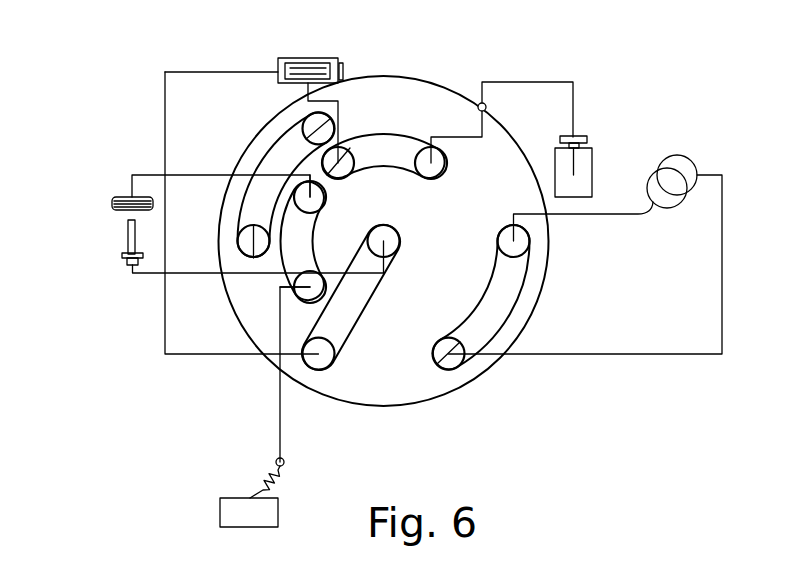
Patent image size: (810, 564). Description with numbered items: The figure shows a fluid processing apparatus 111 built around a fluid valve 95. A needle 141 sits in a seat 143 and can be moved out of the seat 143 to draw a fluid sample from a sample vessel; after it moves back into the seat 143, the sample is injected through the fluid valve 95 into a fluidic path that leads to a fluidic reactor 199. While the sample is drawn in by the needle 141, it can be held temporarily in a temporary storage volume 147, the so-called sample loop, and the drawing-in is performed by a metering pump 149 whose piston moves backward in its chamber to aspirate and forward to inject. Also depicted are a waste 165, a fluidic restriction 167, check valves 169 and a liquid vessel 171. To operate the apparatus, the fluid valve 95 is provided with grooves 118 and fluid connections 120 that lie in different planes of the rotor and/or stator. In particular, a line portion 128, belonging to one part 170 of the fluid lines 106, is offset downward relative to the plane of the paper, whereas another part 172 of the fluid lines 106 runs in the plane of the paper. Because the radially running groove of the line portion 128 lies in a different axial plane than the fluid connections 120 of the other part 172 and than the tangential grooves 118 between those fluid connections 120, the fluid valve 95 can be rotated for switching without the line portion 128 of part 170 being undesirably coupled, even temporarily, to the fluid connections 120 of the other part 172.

The fluid valve 95 is at (397, 77).
The fluid lines 106 is at (481, 283).
The fluid processing apparatus 111 is at (589, 68).
The grooves 118 is at (290, 160).
The fluid connections 120 is at (312, 195).
The line portion 128 is at (399, 330).
The needle 141 is at (128, 228).
The seat 143 is at (125, 258).
The temporary storage volume 147 is at (118, 198).
The metering pump 149 is at (304, 58).
The waste 165 is at (230, 511).
The fluidic restriction 167 is at (262, 482).
The check valves 169 is at (486, 107).
The part of fluid lines 170 is at (342, 331).
The liquid vessel 171 is at (587, 167).
The other part of fluid lines 172 is at (292, 297).
The fluidic reactor 199 is at (686, 156).